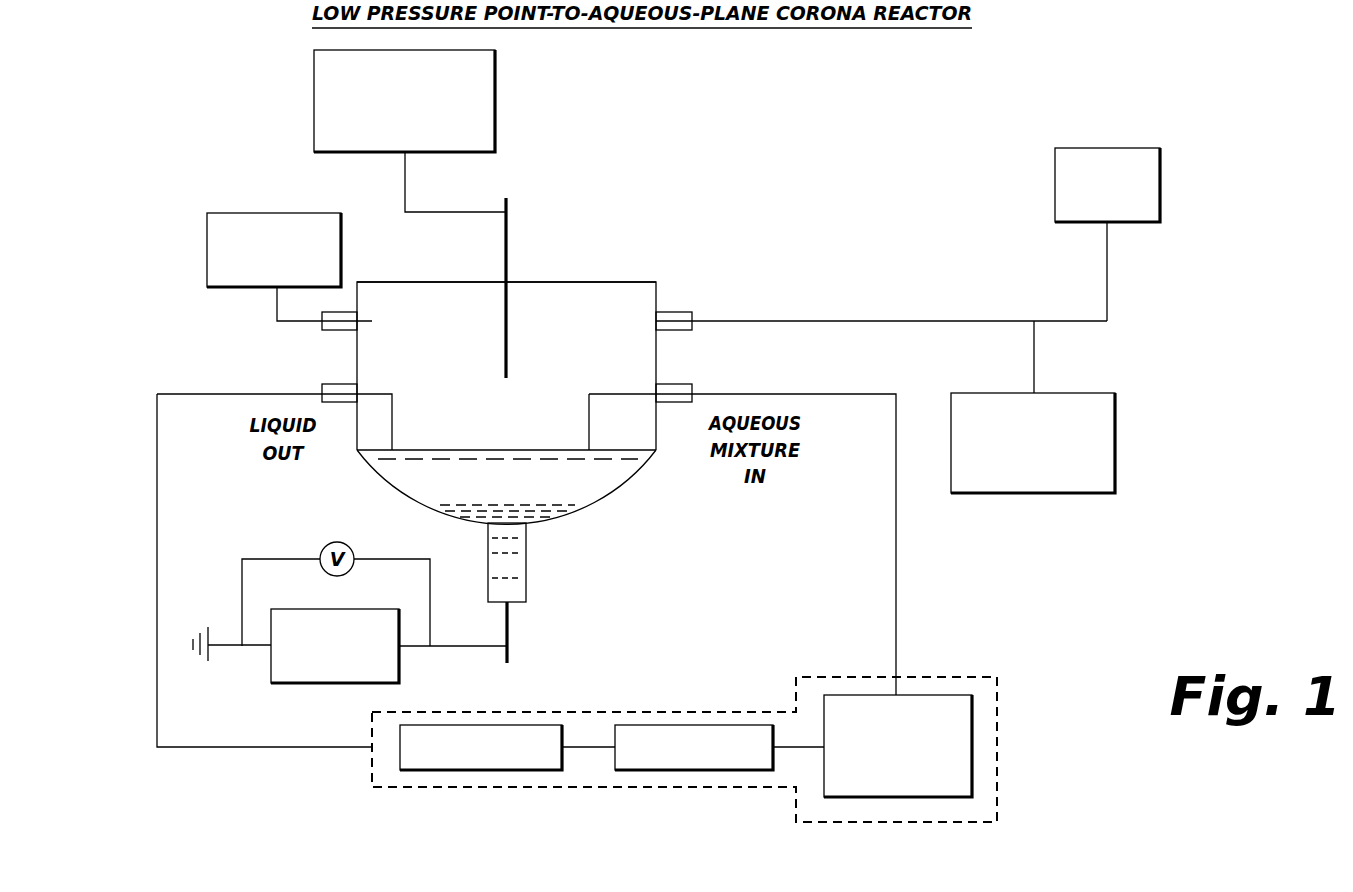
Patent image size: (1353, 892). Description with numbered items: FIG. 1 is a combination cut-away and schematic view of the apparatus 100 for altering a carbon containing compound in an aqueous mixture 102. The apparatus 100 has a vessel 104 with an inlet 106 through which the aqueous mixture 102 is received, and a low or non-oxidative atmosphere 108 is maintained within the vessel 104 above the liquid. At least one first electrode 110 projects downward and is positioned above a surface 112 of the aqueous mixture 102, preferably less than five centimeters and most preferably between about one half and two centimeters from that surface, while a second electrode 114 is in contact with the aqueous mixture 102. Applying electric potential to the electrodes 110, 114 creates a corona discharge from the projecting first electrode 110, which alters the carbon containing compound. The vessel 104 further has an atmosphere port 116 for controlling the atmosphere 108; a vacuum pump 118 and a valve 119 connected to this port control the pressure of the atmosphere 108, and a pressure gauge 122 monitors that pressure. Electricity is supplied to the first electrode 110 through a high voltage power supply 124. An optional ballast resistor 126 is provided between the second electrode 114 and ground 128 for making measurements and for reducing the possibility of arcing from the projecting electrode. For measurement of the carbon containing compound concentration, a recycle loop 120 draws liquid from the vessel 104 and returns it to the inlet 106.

The apparatus 100 is at (732, 423).
The aqueous mixture 102 is at (522, 493).
The vessel 104 is at (607, 517).
The inlet 106 is at (677, 383).
The low or non-oxidative atmosphere 108 is at (610, 350).
The first electrode 110 is at (506, 360).
The surface 112 is at (490, 449).
The second electrode 114 is at (509, 620).
The atmosphere port 116 is at (677, 311).
The vacuum pump 118 is at (1143, 148).
The valve 119 is at (1095, 393).
The recycle loop 120 is at (997, 770).
The pressure gauge 122 is at (310, 212).
The high voltage power supply 124 is at (495, 88).
The resistor 126 is at (270, 672).
The ground 128 is at (202, 618).